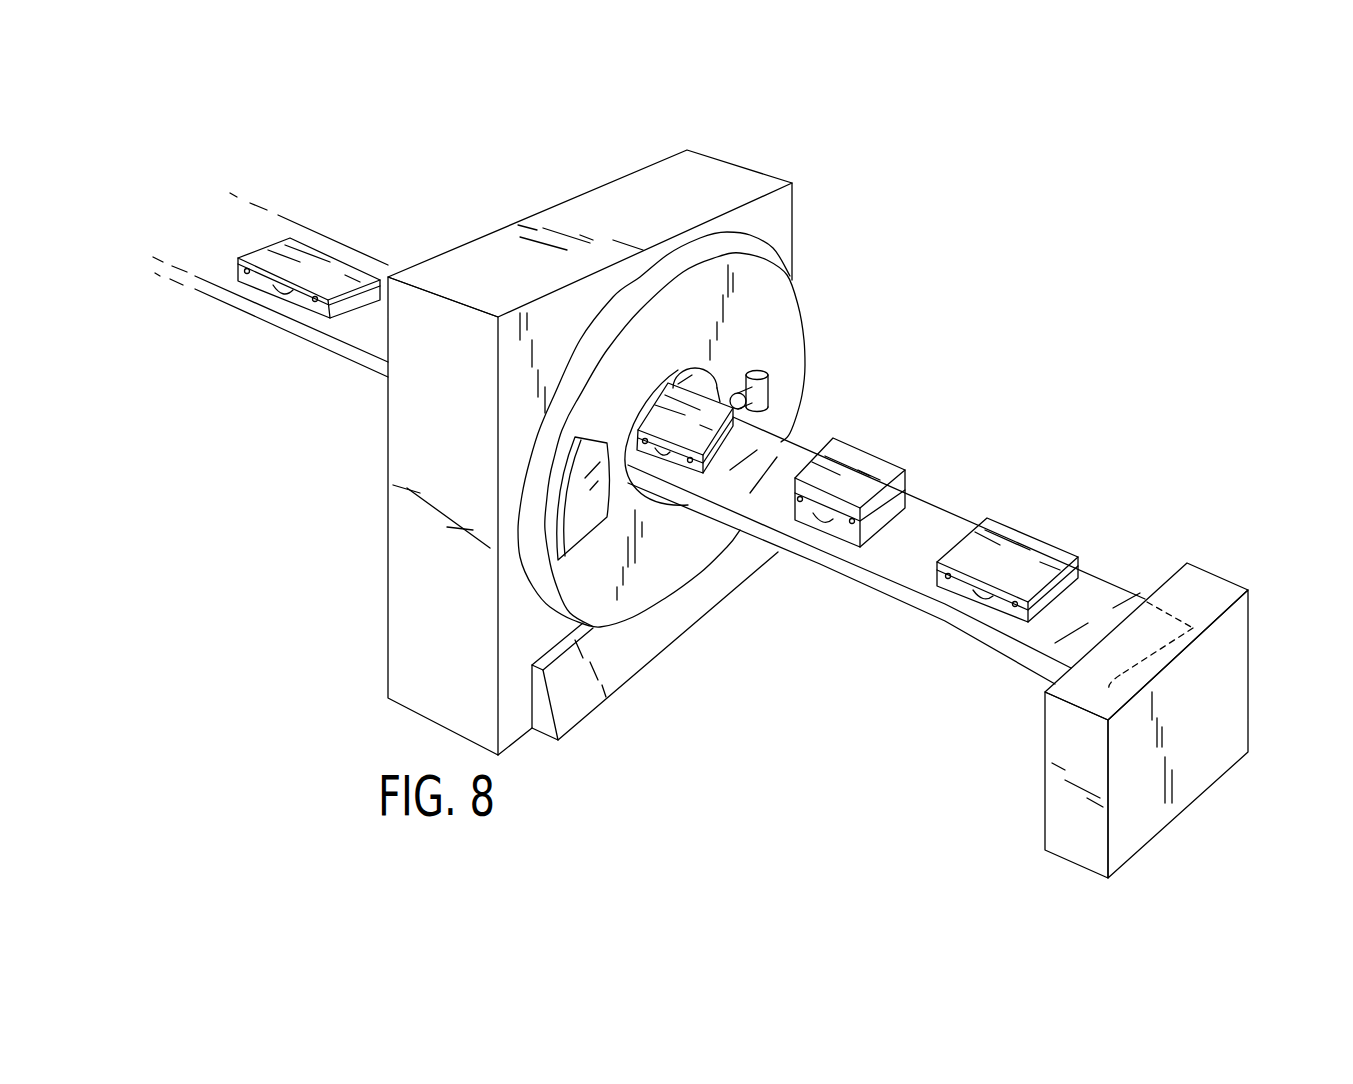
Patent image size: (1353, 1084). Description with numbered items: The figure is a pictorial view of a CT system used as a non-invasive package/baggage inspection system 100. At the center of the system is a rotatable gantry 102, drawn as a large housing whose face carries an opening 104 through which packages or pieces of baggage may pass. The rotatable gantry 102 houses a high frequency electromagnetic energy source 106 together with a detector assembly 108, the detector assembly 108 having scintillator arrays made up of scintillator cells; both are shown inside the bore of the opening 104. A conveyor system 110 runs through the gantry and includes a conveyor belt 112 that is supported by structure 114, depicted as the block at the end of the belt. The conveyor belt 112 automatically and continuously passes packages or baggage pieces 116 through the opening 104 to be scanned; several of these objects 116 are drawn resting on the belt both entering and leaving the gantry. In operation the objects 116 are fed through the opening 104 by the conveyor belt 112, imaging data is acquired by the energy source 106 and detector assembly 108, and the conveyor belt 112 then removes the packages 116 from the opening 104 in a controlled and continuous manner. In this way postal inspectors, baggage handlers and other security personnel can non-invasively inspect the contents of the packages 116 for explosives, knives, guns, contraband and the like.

The package/baggage inspection system 100 is at (1047, 330).
The rotatable gantry 102 is at (785, 315).
The opening 104 is at (699, 382).
The high frequency electromagnetic energy source 106 is at (772, 397).
The detector assembly 108 is at (580, 532).
The conveyor system 110 is at (150, 300).
The conveyor belt 112 is at (345, 330).
The structure 114 is at (1237, 685).
The packages or baggage pieces 116 is at (325, 257).